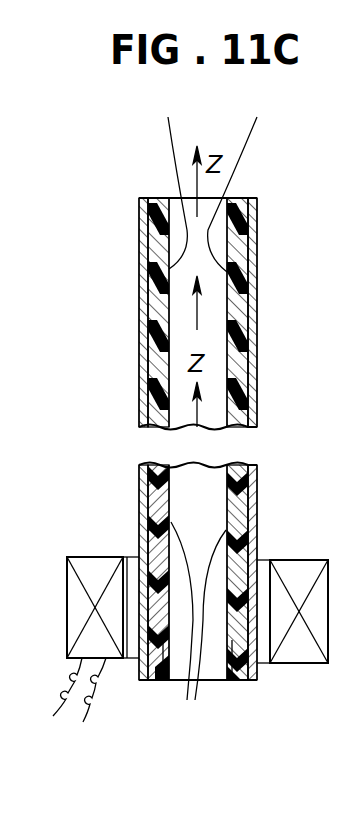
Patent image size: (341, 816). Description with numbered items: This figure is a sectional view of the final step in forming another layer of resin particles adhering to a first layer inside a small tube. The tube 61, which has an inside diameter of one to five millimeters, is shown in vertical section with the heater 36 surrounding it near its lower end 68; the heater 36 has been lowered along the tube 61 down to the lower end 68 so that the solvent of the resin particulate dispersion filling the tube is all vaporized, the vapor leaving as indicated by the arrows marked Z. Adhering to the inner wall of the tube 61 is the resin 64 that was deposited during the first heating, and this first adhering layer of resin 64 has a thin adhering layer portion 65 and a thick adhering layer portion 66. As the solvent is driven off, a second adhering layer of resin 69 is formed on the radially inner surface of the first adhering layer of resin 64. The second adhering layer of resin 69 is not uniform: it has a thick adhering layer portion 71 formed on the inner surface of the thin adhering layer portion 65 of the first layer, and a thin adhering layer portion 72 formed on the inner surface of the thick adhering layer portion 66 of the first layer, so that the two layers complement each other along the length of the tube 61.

The heater 36 is at (67, 632).
The tube 61 is at (138, 508).
The first adhering layer of resin 64 is at (157, 376).
The thin adhering layer portion 65 is at (146, 677).
The thick adhering layer portion 66 is at (157, 199).
The lower end 68 is at (255, 672).
The second adhering layer of resin 69 is at (189, 700).
The thick adhering layer portion 71 is at (162, 681).
The thin adhering layer portion 72 is at (217, 181).